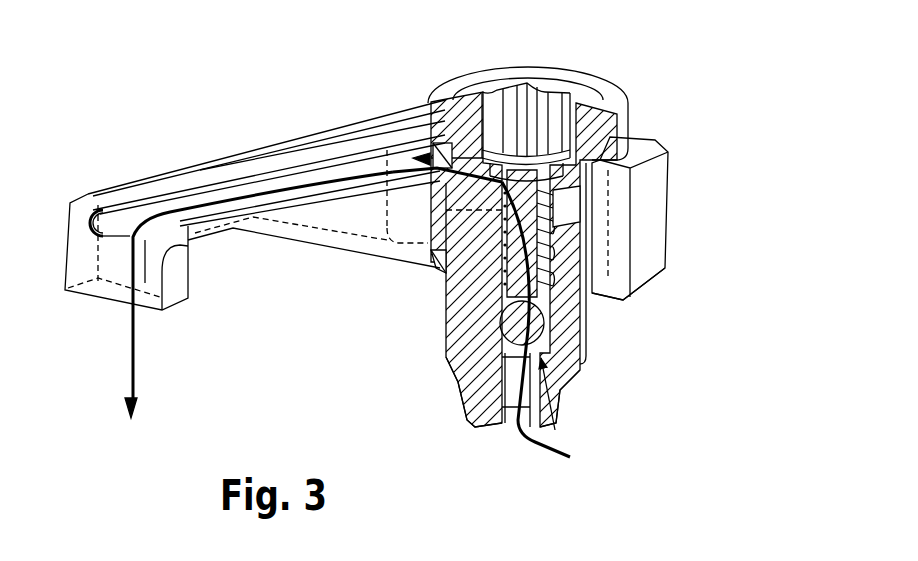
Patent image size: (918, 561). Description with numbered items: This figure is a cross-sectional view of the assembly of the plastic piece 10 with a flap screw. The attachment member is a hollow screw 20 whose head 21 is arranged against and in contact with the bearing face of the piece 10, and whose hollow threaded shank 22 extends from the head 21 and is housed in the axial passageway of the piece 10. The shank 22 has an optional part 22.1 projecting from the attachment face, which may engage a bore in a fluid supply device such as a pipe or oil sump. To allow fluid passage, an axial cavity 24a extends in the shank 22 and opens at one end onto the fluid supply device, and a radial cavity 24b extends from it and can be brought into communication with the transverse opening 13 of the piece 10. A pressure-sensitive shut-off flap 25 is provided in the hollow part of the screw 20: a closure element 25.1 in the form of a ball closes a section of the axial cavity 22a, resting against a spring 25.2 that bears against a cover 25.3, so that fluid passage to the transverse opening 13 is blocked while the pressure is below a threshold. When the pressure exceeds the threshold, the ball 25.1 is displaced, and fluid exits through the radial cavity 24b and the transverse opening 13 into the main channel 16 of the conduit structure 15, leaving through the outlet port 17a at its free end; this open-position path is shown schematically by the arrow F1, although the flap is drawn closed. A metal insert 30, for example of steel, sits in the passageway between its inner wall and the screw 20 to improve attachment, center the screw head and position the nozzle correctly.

The piece 10 is at (681, 225).
The transverse opening 13 is at (387, 148).
The conduit structure 15 is at (248, 241).
The main channel 16 is at (185, 220).
The outlet port 17a is at (135, 300).
The hollow screw 20 is at (541, 267).
The head 21 is at (610, 140).
The hollow threaded shank 22 is at (485, 260).
The part 22.1 is at (458, 402).
The axial cavity 22a is at (556, 422).
The axial cavity 24a is at (508, 398).
The radial cavity 24b is at (474, 165).
The pressure-sensitive shut-off flap 25 is at (625, 297).
The closure element 25.1 is at (530, 330).
The spring 25.2 is at (600, 260).
The cover 25.3 is at (598, 178).
The metal insert 30 is at (437, 268).
The arrow F1 is at (90, 376).